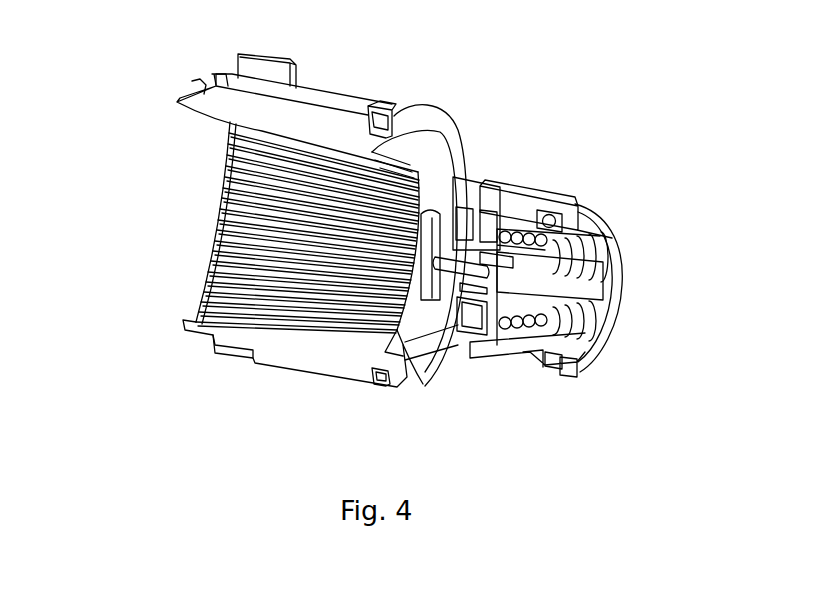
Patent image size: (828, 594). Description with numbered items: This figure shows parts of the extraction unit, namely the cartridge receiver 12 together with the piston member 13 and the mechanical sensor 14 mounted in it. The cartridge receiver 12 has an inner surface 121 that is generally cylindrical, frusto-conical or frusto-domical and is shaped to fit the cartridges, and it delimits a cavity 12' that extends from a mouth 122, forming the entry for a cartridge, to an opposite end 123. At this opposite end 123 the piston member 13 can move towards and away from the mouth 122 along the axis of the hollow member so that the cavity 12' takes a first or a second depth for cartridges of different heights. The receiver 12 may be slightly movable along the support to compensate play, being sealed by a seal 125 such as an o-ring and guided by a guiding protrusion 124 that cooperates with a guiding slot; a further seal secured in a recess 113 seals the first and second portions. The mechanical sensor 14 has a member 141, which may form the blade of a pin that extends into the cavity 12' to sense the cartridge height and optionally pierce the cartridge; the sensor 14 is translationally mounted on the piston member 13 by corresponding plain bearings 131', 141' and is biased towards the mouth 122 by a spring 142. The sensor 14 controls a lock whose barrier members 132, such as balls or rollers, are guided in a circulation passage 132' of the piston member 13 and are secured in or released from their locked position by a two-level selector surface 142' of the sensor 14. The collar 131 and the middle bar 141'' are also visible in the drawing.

The cartridge receiver 12 is at (297, 92).
The cavity 12' is at (144, 158).
The seal 125 is at (395, 112).
The mouth 122 is at (227, 240).
The annular collar 131 is at (423, 224).
The plain bearing 131' is at (481, 184).
The inner surface 121 is at (347, 290).
The guiding protrusion 124 is at (250, 365).
The opposite end 123 is at (390, 330).
The member 141 is at (449, 309).
The plain bearing 141' is at (499, 351).
The middle bar 141'' is at (613, 306).
The recess 113 is at (478, 190).
The piston member 13 is at (508, 195).
The barrier member 132 is at (589, 185).
The circulation passage 132' is at (571, 278).
The selector 142' is at (589, 364).
The spring 142 is at (577, 362).
The mechanical sensor 14 is at (577, 353).